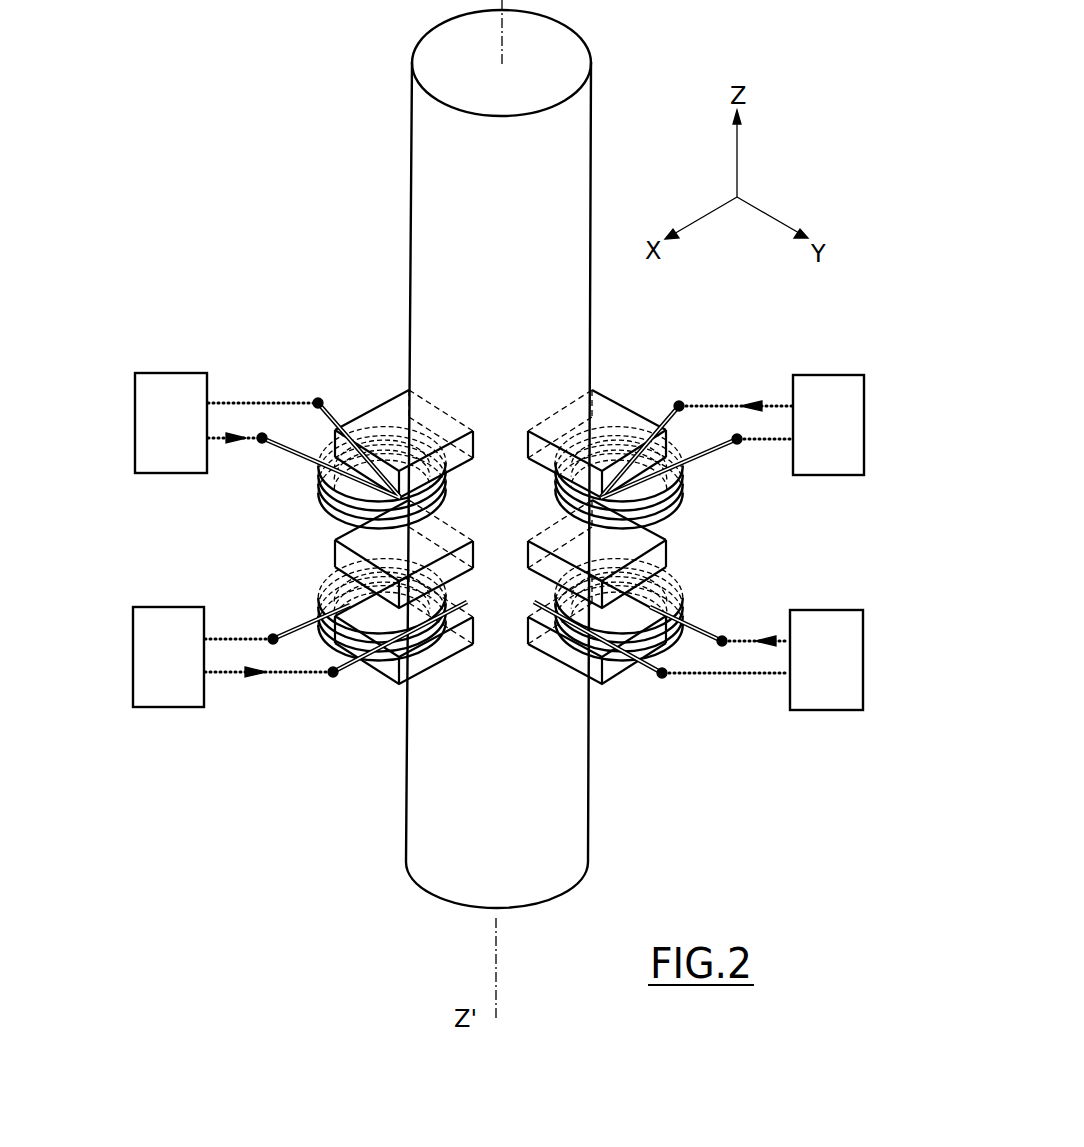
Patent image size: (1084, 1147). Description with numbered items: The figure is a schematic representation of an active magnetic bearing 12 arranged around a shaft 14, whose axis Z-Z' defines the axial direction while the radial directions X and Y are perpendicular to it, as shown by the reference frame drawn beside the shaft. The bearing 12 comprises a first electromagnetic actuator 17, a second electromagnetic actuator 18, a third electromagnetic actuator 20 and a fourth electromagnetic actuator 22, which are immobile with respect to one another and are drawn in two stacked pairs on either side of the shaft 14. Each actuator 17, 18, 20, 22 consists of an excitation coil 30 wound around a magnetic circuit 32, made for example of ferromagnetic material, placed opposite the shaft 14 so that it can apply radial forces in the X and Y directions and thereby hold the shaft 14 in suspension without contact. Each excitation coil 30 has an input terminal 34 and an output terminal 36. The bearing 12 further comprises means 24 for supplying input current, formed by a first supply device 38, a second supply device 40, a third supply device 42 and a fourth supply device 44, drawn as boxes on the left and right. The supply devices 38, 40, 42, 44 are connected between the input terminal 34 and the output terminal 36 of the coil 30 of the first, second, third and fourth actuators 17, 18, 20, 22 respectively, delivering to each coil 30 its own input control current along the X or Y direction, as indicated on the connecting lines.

The bearing 12 is at (127, 349).
The shaft 14 is at (426, 192).
The first electromagnetic actuator 17 is at (654, 389).
The second electromagnetic actuator 18 is at (256, 606).
The third electromagnetic actuator 20 is at (351, 393).
The fourth electromagnetic actuator 22 is at (750, 585).
The means for supplying input current 24 is at (121, 597).
The excitation coil 30 is at (322, 498).
The magnetic circuit 32 is at (388, 416).
The input terminal 34 is at (682, 396).
The output terminal 36 is at (740, 446).
The first supply device 38 is at (848, 433).
The second supply device 40 is at (150, 661).
The third supply device 42 is at (150, 409).
The fourth supply device 44 is at (848, 660).